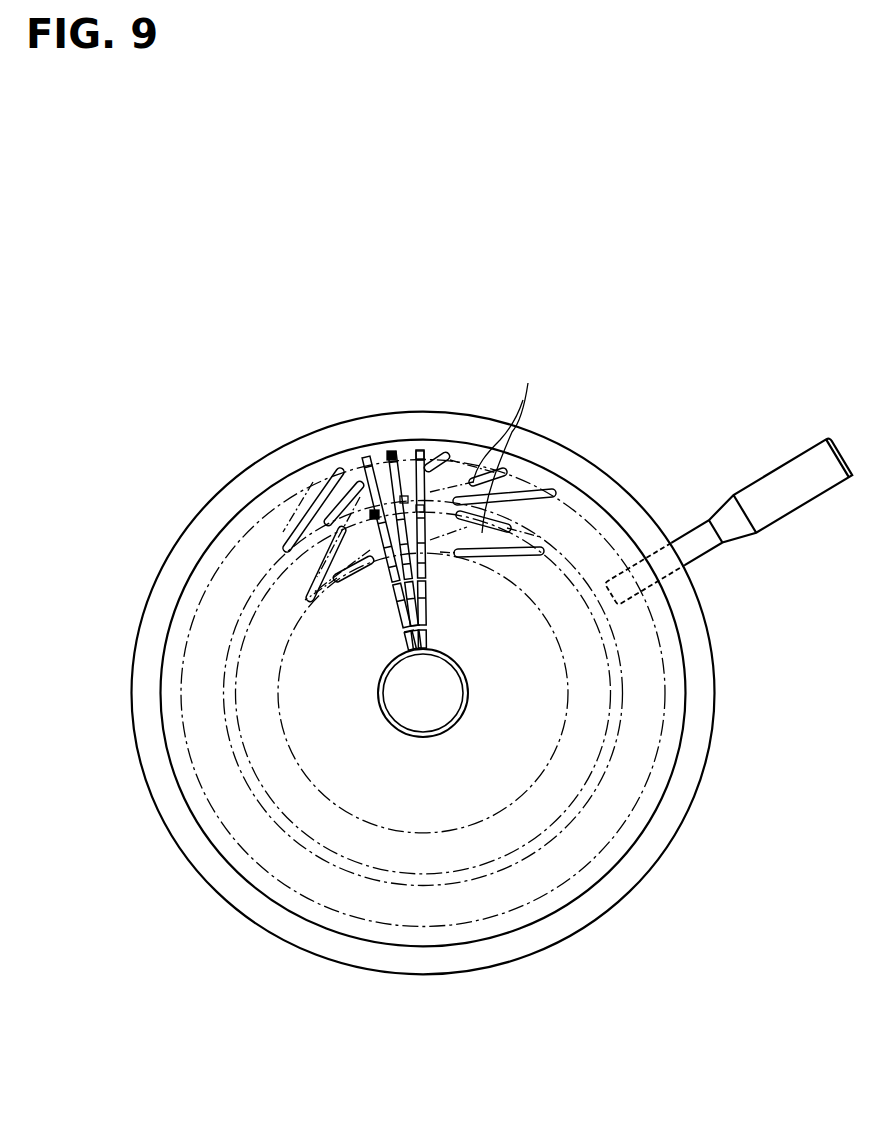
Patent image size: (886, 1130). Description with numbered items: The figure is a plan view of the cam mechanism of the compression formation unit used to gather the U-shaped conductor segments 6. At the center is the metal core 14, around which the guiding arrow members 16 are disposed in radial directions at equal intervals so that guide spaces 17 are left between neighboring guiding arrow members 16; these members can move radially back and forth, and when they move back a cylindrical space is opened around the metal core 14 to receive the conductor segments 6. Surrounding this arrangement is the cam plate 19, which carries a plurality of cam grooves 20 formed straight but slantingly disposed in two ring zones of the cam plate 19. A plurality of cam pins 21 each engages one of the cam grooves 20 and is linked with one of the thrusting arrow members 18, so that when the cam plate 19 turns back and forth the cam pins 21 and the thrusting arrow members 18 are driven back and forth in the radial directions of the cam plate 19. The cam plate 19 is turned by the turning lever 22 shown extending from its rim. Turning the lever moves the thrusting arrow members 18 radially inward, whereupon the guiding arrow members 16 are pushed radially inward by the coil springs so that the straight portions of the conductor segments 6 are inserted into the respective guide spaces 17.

The conductor segment 6 is at (402, 638).
The metal core 14 is at (467, 703).
The guiding arrow member 16 is at (427, 600).
The guide space 17 is at (403, 612).
The thrusting arrow member 18 is at (420, 450).
The cam plate 19 is at (630, 503).
The cam groove 20 is at (532, 378).
The cam pin 21 is at (374, 514).
The turning lever 22 is at (818, 493).